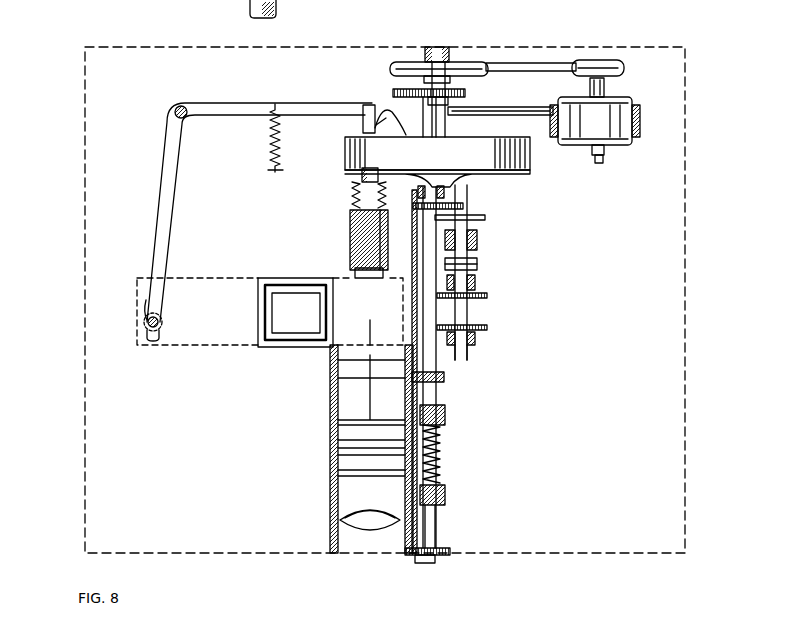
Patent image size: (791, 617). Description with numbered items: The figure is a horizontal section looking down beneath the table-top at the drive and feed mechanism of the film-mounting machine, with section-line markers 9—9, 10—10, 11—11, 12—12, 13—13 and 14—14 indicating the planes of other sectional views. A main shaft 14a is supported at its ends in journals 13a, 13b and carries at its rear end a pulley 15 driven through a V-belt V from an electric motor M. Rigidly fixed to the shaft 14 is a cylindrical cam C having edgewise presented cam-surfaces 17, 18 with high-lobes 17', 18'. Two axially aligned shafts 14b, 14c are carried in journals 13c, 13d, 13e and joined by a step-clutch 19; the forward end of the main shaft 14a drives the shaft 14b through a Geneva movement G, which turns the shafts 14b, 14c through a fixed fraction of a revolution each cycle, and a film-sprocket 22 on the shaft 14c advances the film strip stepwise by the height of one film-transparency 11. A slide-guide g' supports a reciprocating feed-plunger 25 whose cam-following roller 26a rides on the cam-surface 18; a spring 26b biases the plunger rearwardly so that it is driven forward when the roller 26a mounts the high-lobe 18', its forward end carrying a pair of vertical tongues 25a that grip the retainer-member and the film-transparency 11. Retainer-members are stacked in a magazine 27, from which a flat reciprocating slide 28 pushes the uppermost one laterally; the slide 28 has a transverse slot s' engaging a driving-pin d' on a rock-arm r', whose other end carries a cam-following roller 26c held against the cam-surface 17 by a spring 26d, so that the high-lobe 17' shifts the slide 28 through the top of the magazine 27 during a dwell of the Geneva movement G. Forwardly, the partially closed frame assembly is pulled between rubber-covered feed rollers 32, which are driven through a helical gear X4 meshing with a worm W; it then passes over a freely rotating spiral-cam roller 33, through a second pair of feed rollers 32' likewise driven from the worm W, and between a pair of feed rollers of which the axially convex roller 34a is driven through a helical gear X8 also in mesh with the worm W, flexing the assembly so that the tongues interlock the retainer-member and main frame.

The section line 9- 9 is at (437, 0).
The section line 10- 10 is at (14, 311).
The film-transparency 11 is at (360, 553).
The roll of film 12 is at (318, 523).
The section line 13- 13 is at (280, 223).
The shaft 14 is at (345, 0).
The journal 13a is at (426, 50).
The pulley 15 is at (480, 62).
The V-belt V is at (530, 63).
The high-lobe 17' is at (361, 101).
The main shaft 14a is at (447, 122).
The cam-surface 17 is at (437, 143).
The cylindrical cam C is at (534, 160).
The cam-surface 18 is at (453, 177).
The high-lobe 18' is at (467, 179).
The electric motor M is at (624, 144).
The cam-following roller 26c is at (363, 127).
The spring 26d is at (272, 153).
The cam-following roller 26a is at (362, 175).
The spring 26b is at (352, 192).
The feed-plunger 25 is at (365, 226).
The vertical tongues 25a is at (372, 278).
The slide-guide g' is at (335, 245).
The journal 13b is at (450, 193).
The Geneva movement G is at (465, 205).
The shaft 14b is at (485, 218).
The journal 13c is at (474, 240).
The step-clutch 19 is at (477, 268).
The journal 13d is at (477, 286).
The film-sprocket 22 is at (487, 327).
The journal 13e is at (477, 345).
The shaft 14c is at (462, 350).
The magazine 27 is at (258, 278).
The reciprocating slide 28 is at (207, 337).
The rock-arm r' is at (250, 212).
The transverse slot s' is at (125, 310).
The driving-pin d' is at (173, 324).
The feed rollers 32 is at (348, 449).
The roller 33 is at (336, 446).
The second pair of feed rollers 32' is at (352, 473).
The feed roller 34a is at (387, 530).
The helical gear X4 is at (440, 418).
The worm W is at (440, 456).
The helical gear X8 is at (440, 493).